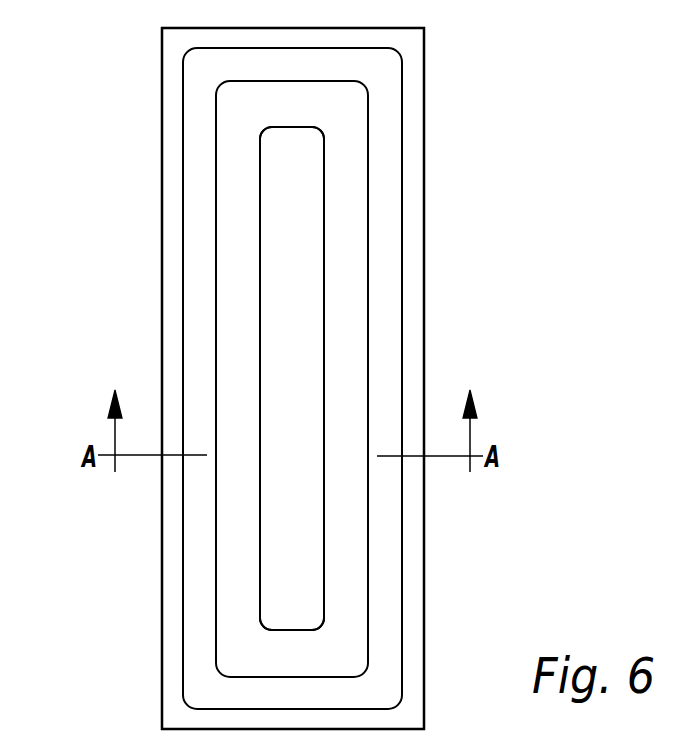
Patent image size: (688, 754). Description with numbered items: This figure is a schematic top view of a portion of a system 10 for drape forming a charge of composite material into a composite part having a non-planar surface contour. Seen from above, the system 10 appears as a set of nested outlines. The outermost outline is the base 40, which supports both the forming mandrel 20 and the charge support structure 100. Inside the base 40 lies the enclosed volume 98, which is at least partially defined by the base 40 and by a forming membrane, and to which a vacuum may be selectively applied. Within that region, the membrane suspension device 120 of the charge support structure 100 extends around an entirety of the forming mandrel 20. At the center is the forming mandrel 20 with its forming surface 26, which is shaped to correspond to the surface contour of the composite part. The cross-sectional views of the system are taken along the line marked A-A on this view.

The system 10 is at (117, 90).
The charge support structure 100 is at (145, 200).
The membrane suspension device 120 is at (195, 312).
The base 40 is at (417, 595).
The enclosed volume 98 is at (360, 408).
The forming mandrel 20 is at (303, 351).
The forming surface 26 is at (285, 280).